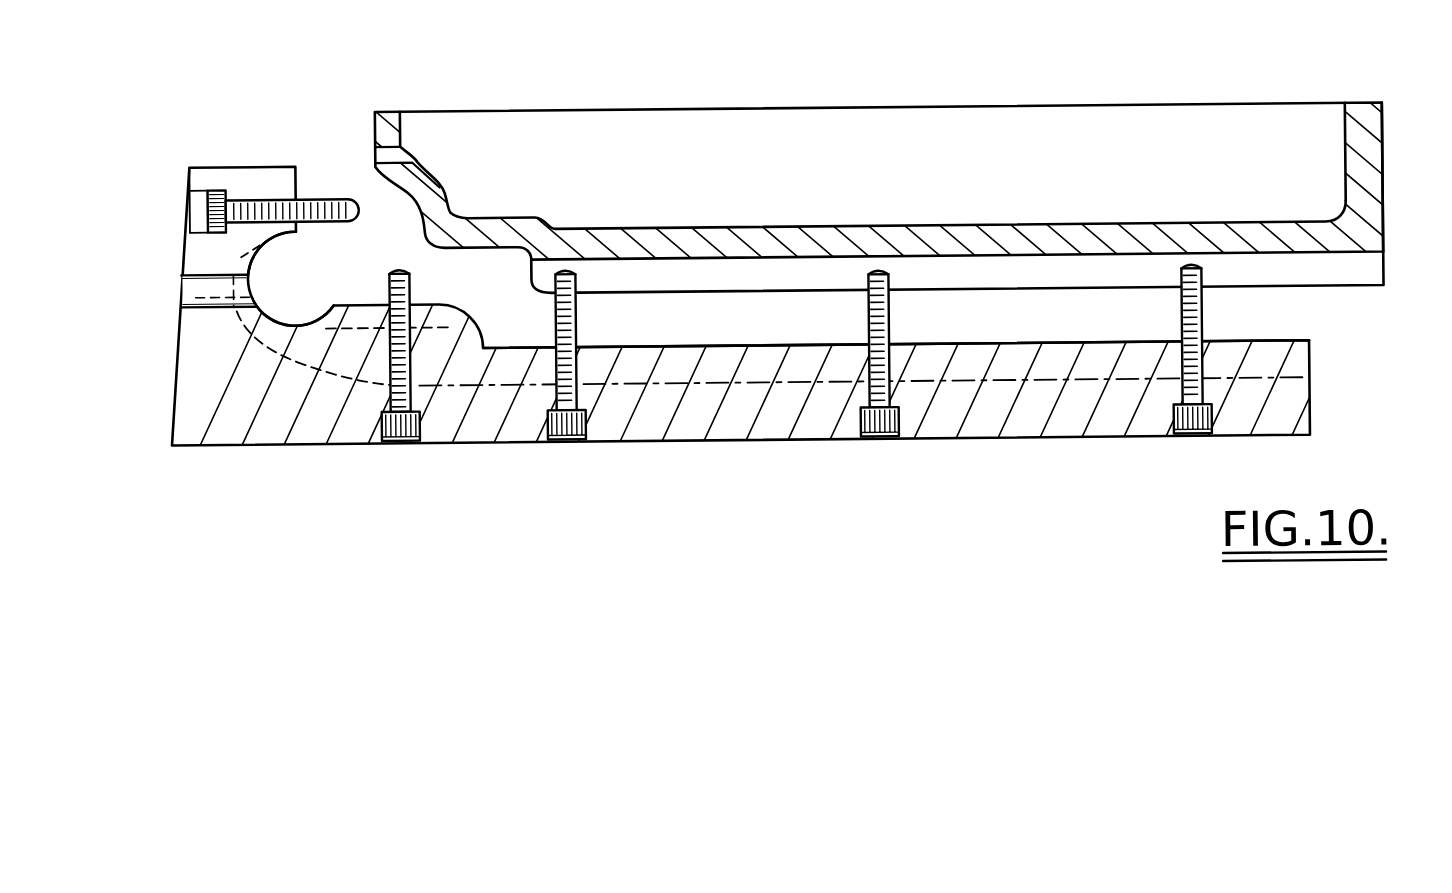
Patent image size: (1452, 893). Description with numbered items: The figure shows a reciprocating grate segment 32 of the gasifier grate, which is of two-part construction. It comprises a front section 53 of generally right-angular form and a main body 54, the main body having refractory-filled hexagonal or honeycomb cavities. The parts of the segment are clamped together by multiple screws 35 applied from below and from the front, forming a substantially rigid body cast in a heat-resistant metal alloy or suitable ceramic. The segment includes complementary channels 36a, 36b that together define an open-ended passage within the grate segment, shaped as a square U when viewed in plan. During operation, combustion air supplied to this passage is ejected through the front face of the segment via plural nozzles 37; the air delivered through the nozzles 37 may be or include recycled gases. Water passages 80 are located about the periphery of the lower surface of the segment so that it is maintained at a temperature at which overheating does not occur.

The reciprocating grate segment 32 is at (855, 99).
The main body 54 is at (1371, 162).
The complementary channel 36b is at (740, 298).
The complementary channel 36a is at (706, 350).
The front section 53 is at (342, 415).
The screws 35 is at (555, 404).
The nozzles 37 is at (183, 292).
The water passages 80 is at (277, 319).